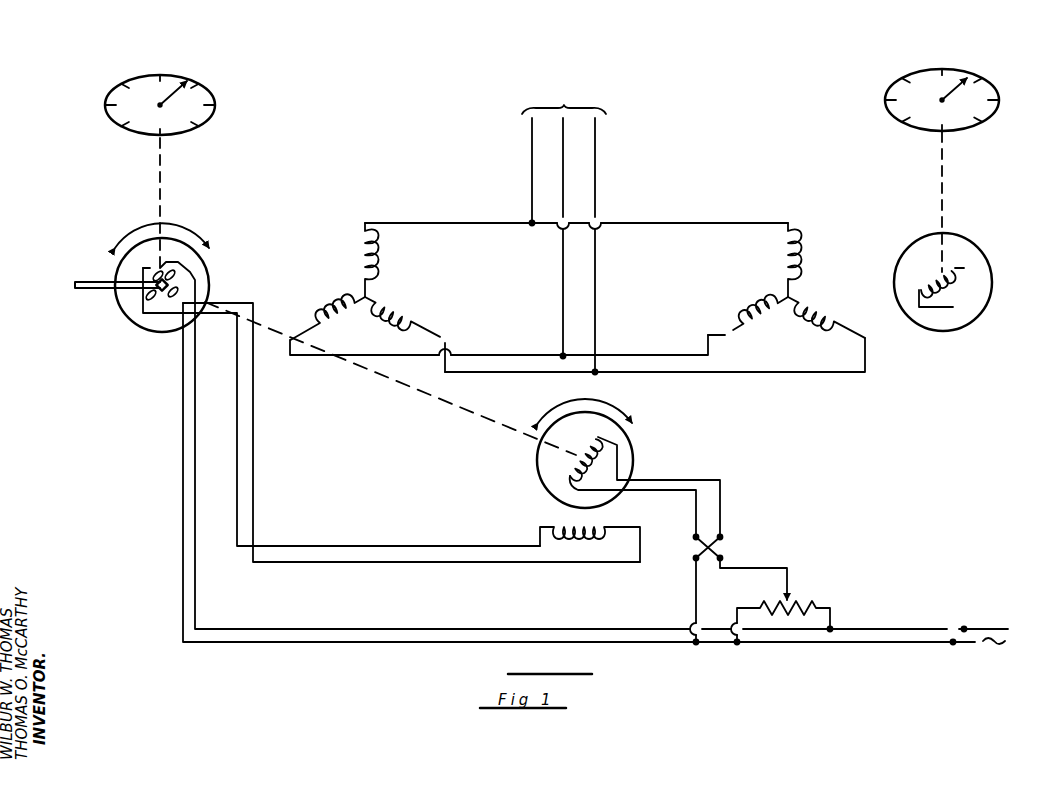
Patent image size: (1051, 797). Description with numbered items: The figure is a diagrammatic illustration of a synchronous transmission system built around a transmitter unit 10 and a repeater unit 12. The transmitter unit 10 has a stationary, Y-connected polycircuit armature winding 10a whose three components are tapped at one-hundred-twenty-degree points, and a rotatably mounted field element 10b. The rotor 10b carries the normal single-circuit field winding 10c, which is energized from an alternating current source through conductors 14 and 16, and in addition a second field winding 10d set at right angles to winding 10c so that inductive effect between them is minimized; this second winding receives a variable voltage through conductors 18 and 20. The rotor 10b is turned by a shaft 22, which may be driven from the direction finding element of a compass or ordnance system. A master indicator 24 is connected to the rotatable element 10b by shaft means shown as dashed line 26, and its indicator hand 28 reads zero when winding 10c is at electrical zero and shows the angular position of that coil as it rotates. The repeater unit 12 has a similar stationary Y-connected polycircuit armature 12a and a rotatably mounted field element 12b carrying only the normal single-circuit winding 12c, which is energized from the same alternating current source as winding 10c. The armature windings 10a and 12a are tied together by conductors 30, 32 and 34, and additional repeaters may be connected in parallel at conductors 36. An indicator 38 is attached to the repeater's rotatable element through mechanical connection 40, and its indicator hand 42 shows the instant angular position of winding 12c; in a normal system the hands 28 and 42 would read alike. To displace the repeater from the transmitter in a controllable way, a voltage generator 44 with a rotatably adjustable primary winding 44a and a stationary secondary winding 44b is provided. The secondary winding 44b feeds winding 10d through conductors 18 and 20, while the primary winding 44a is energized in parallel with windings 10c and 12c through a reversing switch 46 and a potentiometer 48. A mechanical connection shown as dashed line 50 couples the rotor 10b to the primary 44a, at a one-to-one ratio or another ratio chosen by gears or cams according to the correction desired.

The transmitter unit 10 is at (275, 297).
The polycircuit armature winding 10a is at (372, 276).
The field element 10b is at (126, 320).
The single-circuit field winding 10c is at (142, 300).
The second field winding 10d is at (150, 270).
The repeater unit 12 is at (866, 291).
The polycircuit armature 12a is at (796, 259).
The field element 12b is at (910, 320).
The single-circuit winding 12c is at (964, 272).
The conductor 14 is at (182, 393).
The conductor 16 is at (197, 399).
The conductor 18 is at (240, 468).
The conductor 20 is at (255, 482).
The shaft 22 is at (74, 285).
The master indicator 24 is at (216, 102).
The shaft means 26 is at (163, 206).
The indicator hand 28 is at (170, 95).
The conductor 30 is at (483, 224).
The conductor 32 is at (497, 355).
The conductor 34 is at (513, 373).
The conductors 36 is at (564, 230).
The indicator 38 is at (995, 93).
The mechanical connection 40 is at (946, 176).
The indicator hand 42 is at (962, 82).
The voltage generator 44 is at (589, 480).
The primary winding 44a is at (576, 462).
The secondary winding 44b is at (606, 530).
The reversing switch 46 is at (722, 548).
The potentiometer 48 is at (800, 609).
The mechanical connection 50 is at (421, 398).